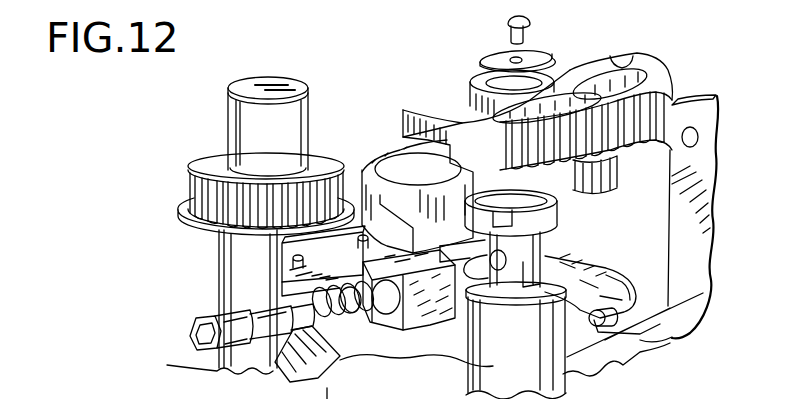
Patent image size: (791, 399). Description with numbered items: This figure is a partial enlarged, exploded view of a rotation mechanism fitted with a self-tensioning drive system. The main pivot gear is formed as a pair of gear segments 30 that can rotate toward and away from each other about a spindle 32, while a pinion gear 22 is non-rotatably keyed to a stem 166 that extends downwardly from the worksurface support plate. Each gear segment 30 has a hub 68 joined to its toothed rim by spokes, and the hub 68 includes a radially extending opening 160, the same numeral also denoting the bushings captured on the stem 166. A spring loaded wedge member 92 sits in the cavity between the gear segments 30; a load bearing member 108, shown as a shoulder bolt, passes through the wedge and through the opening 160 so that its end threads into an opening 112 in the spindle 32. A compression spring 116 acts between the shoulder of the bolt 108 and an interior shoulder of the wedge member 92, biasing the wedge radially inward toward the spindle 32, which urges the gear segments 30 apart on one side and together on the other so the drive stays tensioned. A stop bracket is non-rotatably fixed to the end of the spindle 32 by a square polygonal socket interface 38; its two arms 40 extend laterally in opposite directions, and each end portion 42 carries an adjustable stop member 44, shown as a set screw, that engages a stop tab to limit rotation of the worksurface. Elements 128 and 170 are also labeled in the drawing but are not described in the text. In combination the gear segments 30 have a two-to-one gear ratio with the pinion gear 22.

The stem 166 is at (245, 128).
The pinion gear 22 is at (184, 220).
The load bearing member 108 is at (195, 345).
The spring 116 is at (372, 355).
The wedge member 92 is at (414, 318).
The gear segments 30 is at (386, 158).
The hub portion 68 is at (551, 212).
The radially extending opening 160 is at (540, 244).
The spindle 32 is at (542, 252).
The opening 112 is at (493, 265).
The polygonal socket interface 38 is at (535, 280).
The adjustable stop member 44 is at (600, 326).
The arms 40 is at (630, 330).
The end portion 42 is at (648, 328).
The member 128 is at (248, 398).
The member 170 is at (146, 393).